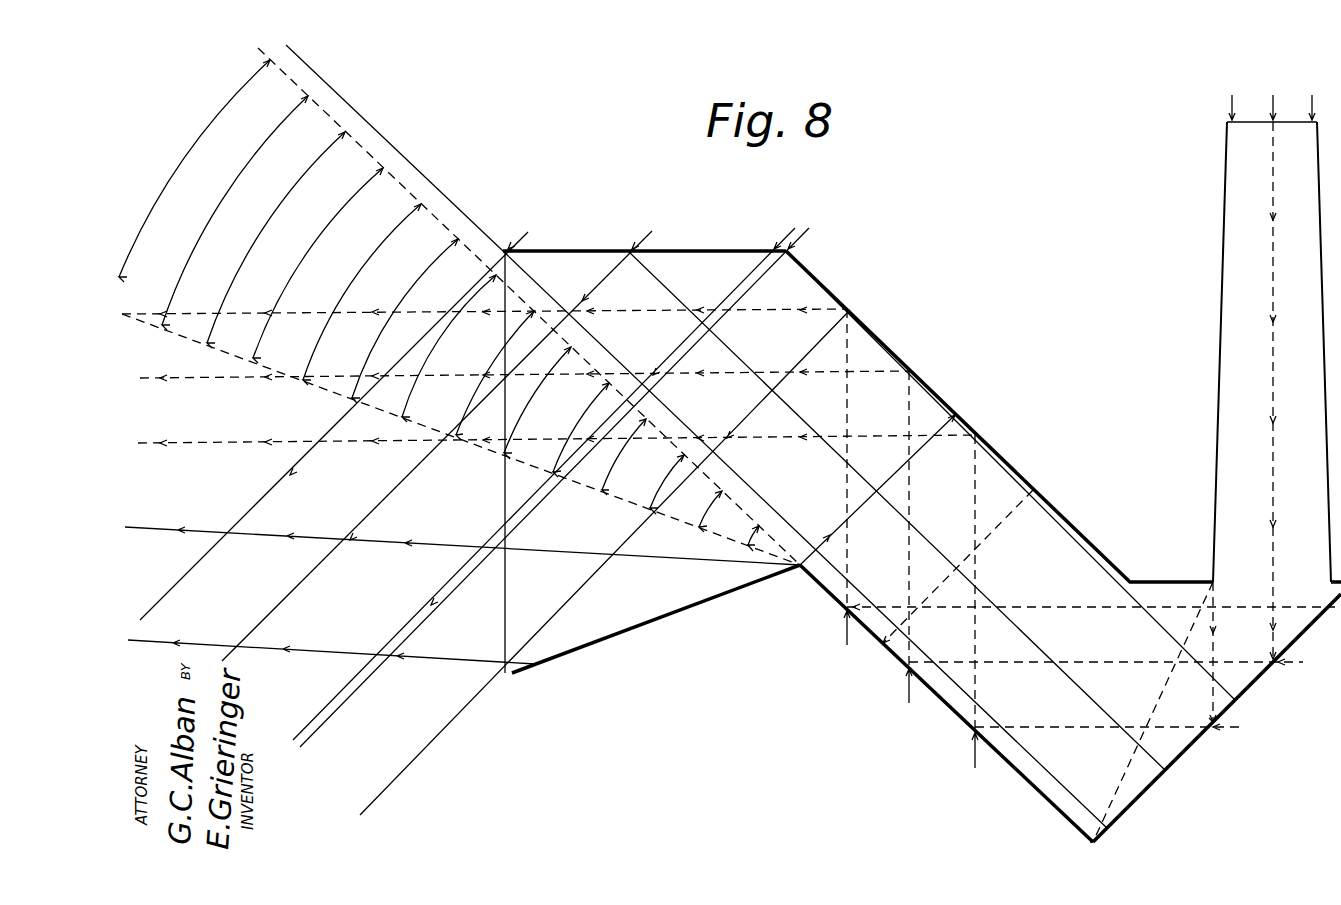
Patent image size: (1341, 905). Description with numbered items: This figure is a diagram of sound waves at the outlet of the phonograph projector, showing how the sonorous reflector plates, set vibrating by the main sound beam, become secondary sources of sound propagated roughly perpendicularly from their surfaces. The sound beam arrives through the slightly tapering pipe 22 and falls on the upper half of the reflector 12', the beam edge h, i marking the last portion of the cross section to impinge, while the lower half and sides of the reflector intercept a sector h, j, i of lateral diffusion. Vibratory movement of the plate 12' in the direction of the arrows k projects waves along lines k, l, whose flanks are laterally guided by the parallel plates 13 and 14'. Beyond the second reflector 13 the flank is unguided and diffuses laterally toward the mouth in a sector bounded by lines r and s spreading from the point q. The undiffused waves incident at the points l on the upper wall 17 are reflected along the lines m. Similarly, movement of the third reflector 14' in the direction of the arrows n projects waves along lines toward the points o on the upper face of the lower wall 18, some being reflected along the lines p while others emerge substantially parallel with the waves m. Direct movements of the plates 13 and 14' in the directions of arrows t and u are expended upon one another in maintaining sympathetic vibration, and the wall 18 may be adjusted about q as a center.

The upper wall 17 is at (688, 251).
The third reflector 14' is at (999, 416).
The second reflector 13 is at (946, 706).
The sonorous reflector 12' is at (1217, 718).
The lower wall 18 is at (677, 617).
The tapering pipe 22 is at (1222, 229).
The points of incidence on plate 17 l is at (644, 238).
The arrows of vibratory movement of plate 14' n is at (668, 523).
The boundary of lateral diffusion sector r is at (434, 209).
The boundary of lateral diffusion sector s is at (377, 400).
The reflected wave lines m is at (408, 633).
The reflected wave lines from plate 18 p is at (437, 458).
The points of incidence on plate 18 o is at (795, 567).
The apex of diffusion sector q is at (799, 576).
The arrow of direct movement of plate 13' t is at (873, 647).
The arrow of direct movement of plate 14' u is at (1044, 487).
The edge of sound beam h is at (1221, 646).
The edge of sound beam i is at (1199, 714).
The corner of diffusion sector j is at (1090, 845).
The arrows of vibratory movement of plate 12' k is at (1247, 709).